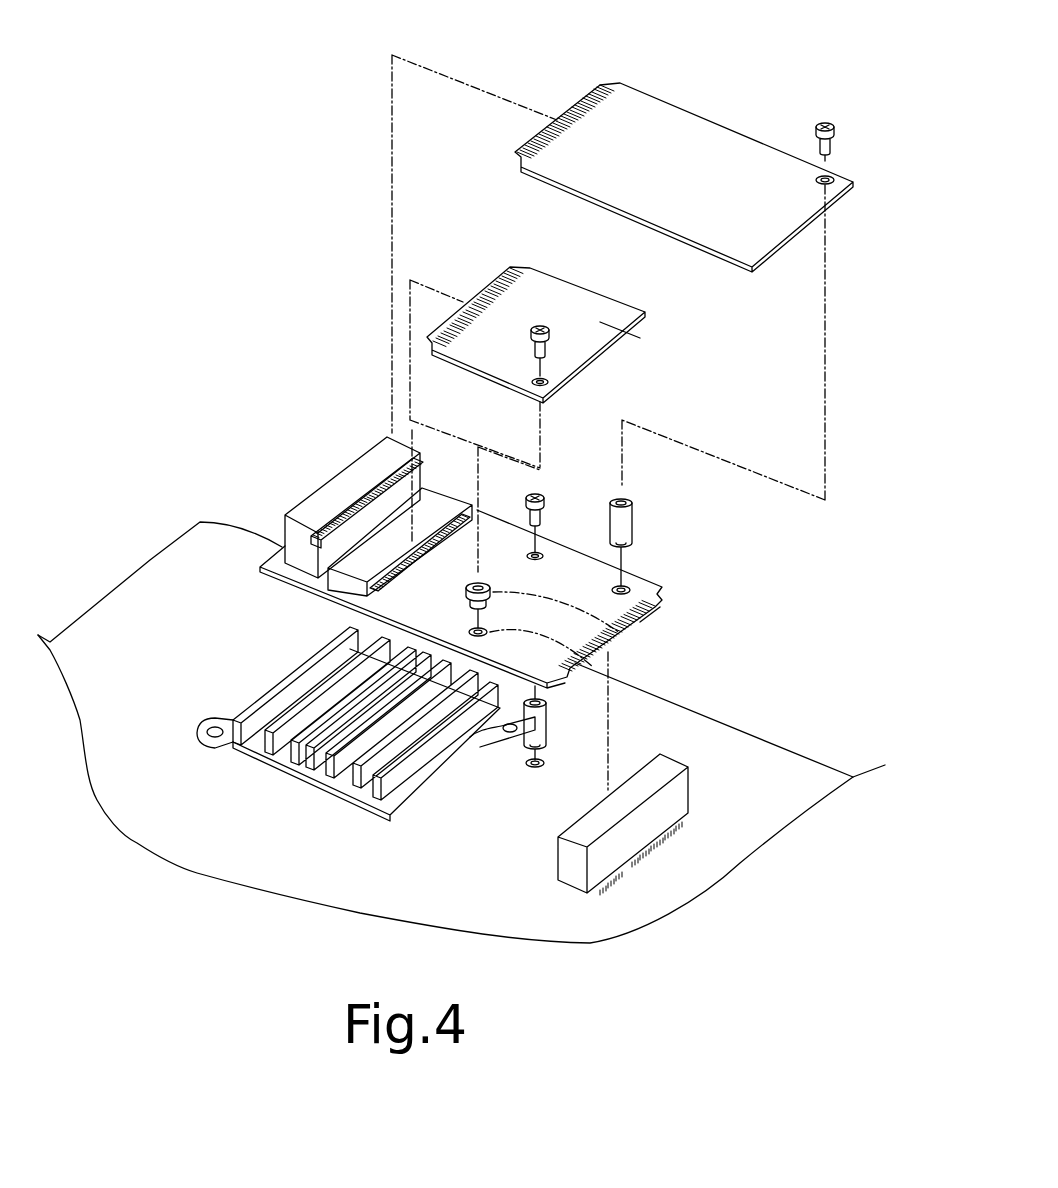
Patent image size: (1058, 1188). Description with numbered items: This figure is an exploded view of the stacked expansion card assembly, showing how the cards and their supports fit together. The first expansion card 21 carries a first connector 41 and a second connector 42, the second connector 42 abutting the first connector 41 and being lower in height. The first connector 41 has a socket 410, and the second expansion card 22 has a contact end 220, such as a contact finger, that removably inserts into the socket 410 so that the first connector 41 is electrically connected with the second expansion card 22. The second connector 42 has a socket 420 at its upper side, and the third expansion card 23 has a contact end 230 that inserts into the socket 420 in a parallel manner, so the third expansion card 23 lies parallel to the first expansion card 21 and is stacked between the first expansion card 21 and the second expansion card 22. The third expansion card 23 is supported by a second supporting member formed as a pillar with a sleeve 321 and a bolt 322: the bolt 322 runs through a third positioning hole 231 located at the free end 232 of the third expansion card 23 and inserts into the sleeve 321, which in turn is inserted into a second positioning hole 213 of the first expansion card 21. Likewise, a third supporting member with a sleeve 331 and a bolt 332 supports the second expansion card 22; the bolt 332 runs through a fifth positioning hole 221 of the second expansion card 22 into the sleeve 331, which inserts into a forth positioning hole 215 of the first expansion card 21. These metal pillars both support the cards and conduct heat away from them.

The first expansion card 21 is at (494, 587).
The second expansion card 22 is at (709, 162).
The third expansion card 23 is at (563, 322).
The first connector 41 is at (388, 496).
The second connector 42 is at (303, 522).
The second positioning hole 213 is at (600, 666).
The forth positioning hole 215 is at (626, 586).
The contact end 220 is at (568, 112).
The fifth positioning hole 221 is at (835, 177).
The contact end 230 is at (478, 298).
The third positioning hole 231 is at (555, 385).
The free end 232 is at (597, 328).
The sleeve 321 is at (643, 630).
The bolt 322 is at (527, 347).
The sleeve 331 is at (630, 518).
The bolt 332 is at (823, 120).
The socket 410 is at (375, 490).
The socket 420 is at (330, 598).